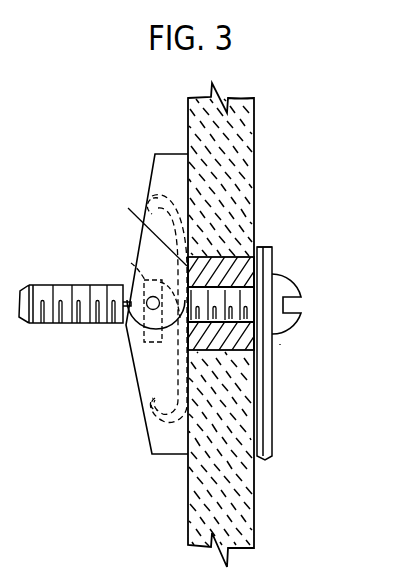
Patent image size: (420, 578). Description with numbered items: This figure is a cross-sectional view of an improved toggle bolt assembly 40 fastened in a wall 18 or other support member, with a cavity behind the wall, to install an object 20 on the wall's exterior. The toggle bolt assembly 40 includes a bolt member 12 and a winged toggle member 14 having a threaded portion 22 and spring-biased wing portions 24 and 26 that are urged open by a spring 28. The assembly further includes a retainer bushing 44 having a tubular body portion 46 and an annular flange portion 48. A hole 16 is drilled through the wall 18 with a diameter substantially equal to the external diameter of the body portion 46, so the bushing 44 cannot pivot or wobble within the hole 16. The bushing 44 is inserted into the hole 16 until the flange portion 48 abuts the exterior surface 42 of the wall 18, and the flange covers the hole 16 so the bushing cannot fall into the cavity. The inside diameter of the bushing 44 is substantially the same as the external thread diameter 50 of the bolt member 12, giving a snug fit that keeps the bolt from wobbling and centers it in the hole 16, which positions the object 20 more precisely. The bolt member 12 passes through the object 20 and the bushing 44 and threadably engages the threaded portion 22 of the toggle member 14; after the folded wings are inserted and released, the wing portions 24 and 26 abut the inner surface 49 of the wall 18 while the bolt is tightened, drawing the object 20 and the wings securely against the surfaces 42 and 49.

The bolt member 12 is at (286, 281).
The winged toggle member 14 is at (152, 380).
The hole 16 is at (233, 252).
The wall 18 is at (248, 122).
The object 20 is at (273, 418).
The threaded portion 22 is at (131, 263).
The wing portion 24 is at (133, 227).
The wing portion 26 is at (140, 357).
The spring 28 is at (154, 157).
The toggle bolt assembly 40 is at (279, 343).
The exterior surface 42 is at (219, 325).
The retainer bushing 44 is at (147, 230).
The body portion 46 is at (222, 352).
The flange portion 48 is at (271, 248).
The inner surface 49 is at (187, 501).
The external thread diameter 50 is at (68, 326).